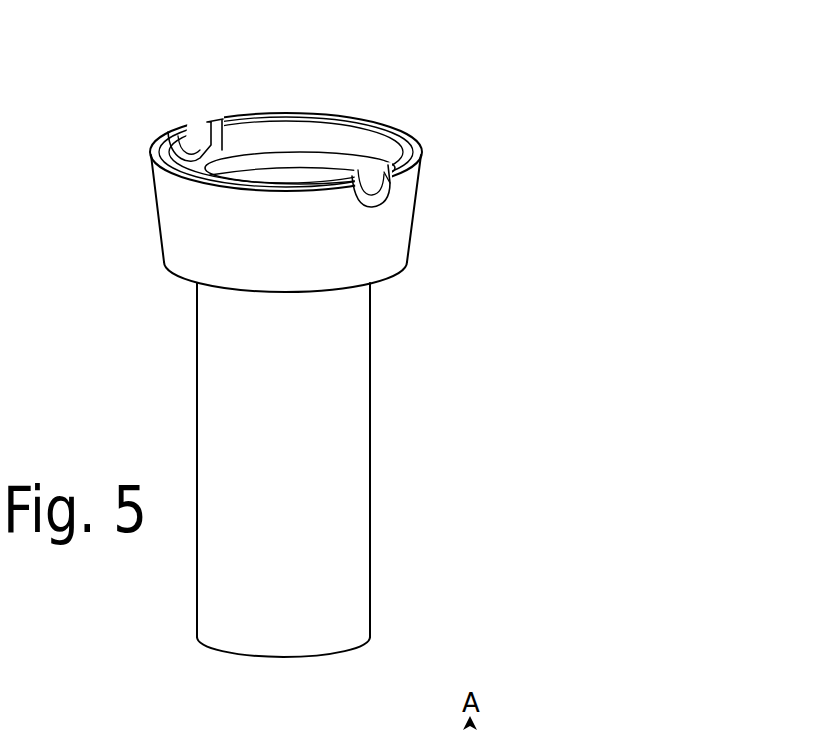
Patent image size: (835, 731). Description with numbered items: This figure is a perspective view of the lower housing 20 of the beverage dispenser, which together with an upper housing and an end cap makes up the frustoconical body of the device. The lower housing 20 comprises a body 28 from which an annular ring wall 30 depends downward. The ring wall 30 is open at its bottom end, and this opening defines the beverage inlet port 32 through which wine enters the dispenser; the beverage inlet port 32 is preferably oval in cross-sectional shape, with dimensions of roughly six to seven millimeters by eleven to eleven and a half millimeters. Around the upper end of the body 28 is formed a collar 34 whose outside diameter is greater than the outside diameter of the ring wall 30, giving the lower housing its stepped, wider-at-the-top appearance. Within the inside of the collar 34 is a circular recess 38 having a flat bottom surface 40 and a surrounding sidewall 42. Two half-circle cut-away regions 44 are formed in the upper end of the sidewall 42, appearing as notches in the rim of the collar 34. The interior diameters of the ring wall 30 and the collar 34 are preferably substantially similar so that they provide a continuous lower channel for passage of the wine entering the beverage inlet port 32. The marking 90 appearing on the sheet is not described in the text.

The lower housing 20 is at (574, 80).
The body 28 is at (184, 260).
The annular ring wall 30 is at (340, 463).
The beverage inlet port 32 is at (277, 657).
The collar 34 is at (388, 240).
The circular recess 38 is at (270, 136).
The flat bottom surface 40 is at (290, 157).
The sidewall 42 is at (358, 140).
The half circle cut-away regions 44 is at (207, 150).
The sheet marker 90 is at (761, 719).